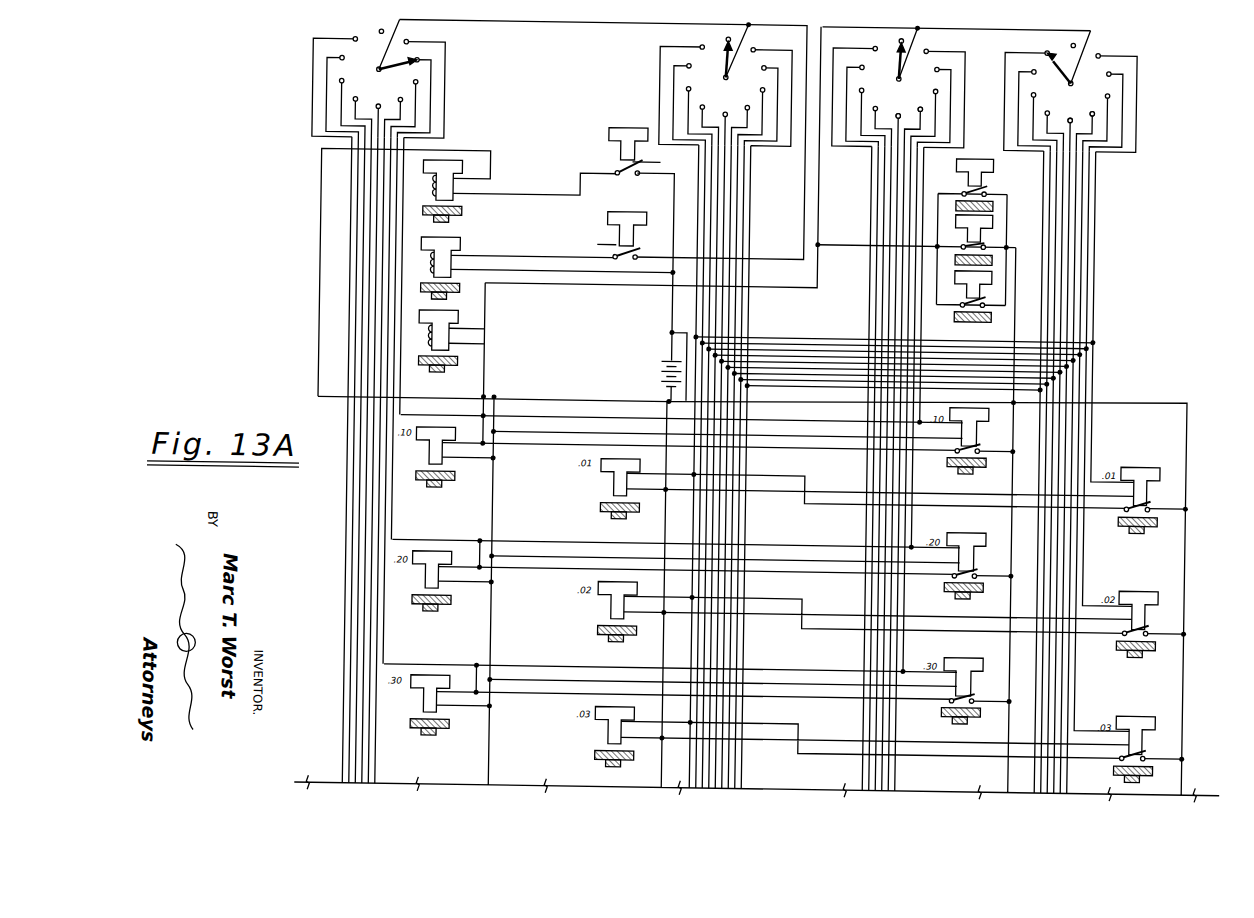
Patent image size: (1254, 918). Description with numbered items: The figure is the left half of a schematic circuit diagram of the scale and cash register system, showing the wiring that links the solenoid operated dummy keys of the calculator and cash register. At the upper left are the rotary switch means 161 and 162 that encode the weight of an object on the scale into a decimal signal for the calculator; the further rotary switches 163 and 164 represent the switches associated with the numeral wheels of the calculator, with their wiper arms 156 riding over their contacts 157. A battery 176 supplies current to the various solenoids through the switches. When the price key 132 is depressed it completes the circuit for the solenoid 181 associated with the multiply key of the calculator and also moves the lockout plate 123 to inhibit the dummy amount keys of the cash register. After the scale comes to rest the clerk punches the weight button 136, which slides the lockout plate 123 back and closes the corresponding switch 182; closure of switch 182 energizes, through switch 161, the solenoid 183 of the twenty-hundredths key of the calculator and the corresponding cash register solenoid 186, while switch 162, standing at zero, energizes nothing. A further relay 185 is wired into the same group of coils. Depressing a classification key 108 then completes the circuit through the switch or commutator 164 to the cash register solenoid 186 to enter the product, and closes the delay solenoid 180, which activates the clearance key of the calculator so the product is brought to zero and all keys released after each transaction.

The switch means 161 is at (367, 53).
The switch means 162 is at (711, 56).
The rotary switch 163 is at (887, 57).
The rotary switch 164 is at (1091, 50).
The wiper arm 156 is at (891, 69).
The switch contacts 157 is at (913, 105).
The classification key 108 is at (998, 206).
The solenoid 181 is at (435, 166).
The key 132 is at (638, 124).
The lockout plate 123 is at (664, 273).
The battery 176 is at (658, 374).
The weight button 136 is at (634, 210).
The switch 182 is at (610, 259).
The relay 185 is at (436, 237).
The delay solenoid 180 is at (436, 311).
The solenoid 183 is at (418, 555).
The solenoid 186 is at (972, 512).